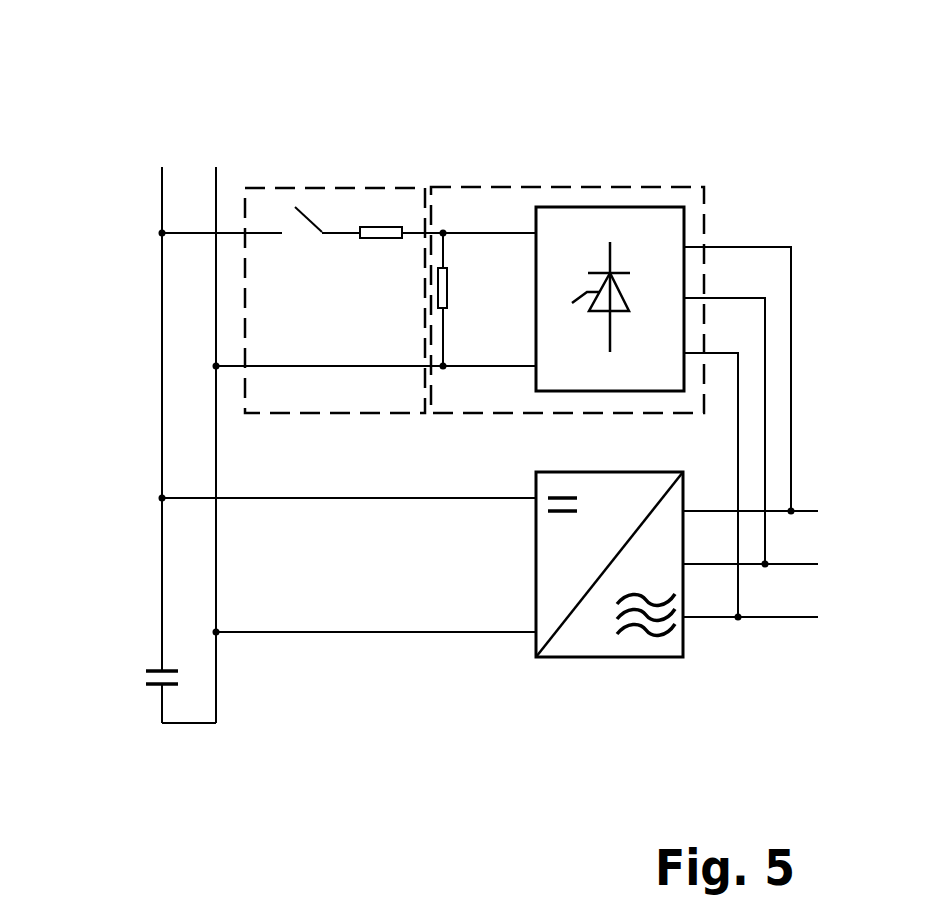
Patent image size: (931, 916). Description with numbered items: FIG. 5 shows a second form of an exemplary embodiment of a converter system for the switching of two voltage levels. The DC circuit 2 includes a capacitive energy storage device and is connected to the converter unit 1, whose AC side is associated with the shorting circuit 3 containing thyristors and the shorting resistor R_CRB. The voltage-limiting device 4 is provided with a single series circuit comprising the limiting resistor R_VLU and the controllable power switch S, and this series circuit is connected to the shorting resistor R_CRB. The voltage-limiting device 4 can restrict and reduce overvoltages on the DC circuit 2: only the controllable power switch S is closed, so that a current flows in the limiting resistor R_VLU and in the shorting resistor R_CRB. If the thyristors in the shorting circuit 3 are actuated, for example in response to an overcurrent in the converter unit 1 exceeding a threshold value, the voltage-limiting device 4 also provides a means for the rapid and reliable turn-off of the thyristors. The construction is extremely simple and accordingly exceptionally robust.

The converter unit 1 is at (602, 658).
The DC circuit 2 is at (140, 250).
The shorting circuit 3 is at (590, 187).
The voltage-limiting device 4 is at (342, 187).